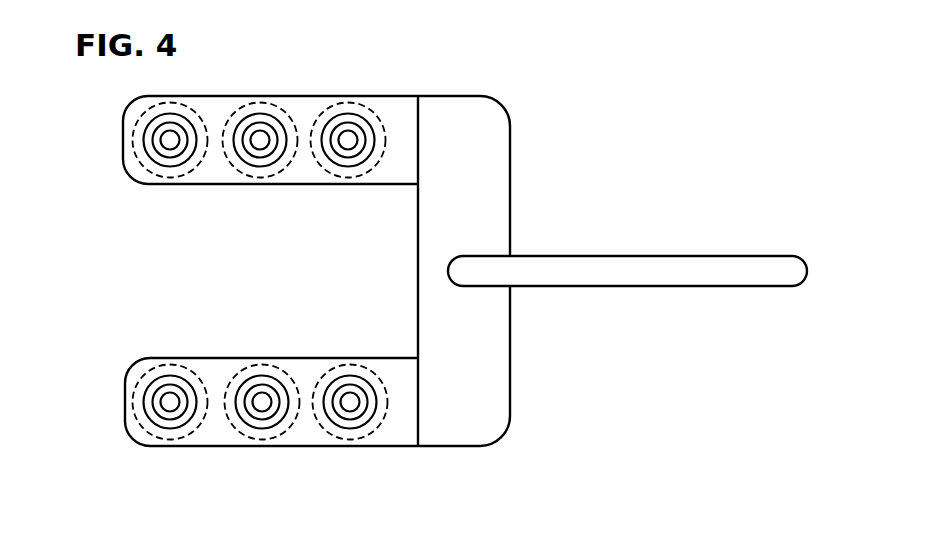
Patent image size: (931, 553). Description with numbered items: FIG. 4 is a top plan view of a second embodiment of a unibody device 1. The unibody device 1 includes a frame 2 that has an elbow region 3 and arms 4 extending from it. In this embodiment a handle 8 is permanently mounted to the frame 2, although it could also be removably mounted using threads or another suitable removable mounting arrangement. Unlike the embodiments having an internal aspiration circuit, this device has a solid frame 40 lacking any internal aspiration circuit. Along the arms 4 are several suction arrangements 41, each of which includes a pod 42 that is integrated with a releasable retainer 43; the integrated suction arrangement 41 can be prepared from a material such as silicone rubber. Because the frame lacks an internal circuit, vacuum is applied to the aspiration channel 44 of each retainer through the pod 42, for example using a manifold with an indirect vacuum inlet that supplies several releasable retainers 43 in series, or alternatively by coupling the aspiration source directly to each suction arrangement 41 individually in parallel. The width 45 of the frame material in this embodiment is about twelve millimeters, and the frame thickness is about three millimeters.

The unibody device 1 is at (567, 61).
The frame 2 is at (407, 447).
The elbow region 3 is at (510, 424).
The arms 4 is at (217, 447).
The handle 8 is at (798, 258).
The solid frame 40 is at (310, 447).
The suction arrangement 41 is at (140, 430).
The pod 42 is at (176, 386).
The releasable retainer 43 is at (138, 382).
The aspiration channel 44 is at (171, 406).
The width 45 is at (122, 184).